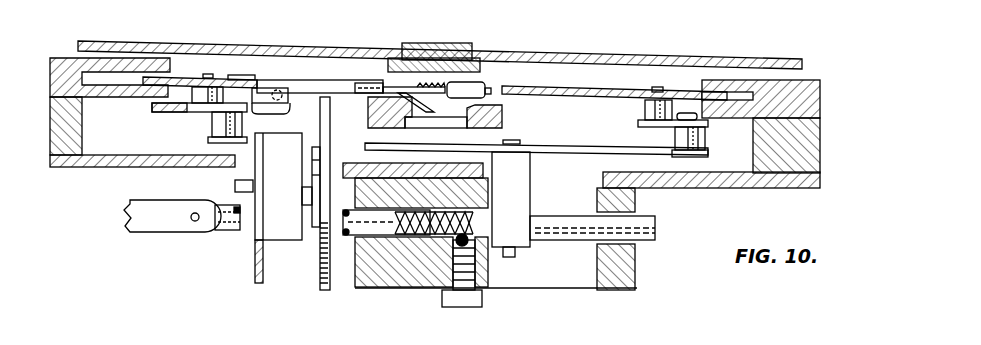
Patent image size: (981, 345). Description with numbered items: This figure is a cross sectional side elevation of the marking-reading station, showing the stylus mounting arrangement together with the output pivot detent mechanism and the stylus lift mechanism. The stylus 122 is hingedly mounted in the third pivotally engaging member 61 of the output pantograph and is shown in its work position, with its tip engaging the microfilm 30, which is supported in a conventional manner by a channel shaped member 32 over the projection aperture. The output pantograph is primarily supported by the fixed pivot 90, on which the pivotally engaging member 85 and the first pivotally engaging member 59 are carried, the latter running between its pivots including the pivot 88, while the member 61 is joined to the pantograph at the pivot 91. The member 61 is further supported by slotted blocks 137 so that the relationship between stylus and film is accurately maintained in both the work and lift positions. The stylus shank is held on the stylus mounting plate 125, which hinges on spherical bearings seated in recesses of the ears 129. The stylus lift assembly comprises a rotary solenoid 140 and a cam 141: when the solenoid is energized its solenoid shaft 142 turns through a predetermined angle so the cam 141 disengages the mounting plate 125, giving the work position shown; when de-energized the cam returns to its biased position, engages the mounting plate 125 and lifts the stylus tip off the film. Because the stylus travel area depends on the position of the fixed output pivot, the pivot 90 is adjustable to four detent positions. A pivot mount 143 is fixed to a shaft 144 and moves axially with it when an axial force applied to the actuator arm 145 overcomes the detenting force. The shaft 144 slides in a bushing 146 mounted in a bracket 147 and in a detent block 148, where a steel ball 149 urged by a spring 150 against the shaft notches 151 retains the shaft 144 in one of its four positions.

The slotted blocks 137 is at (60, 58).
The third pivotally engaging member 61 is at (193, 76).
The stylus mounting plate 125 is at (322, 78).
The stylus 122 is at (423, 105).
The pivot 91 is at (660, 87).
The pivotally engaging member 85 is at (172, 110).
The ears 129 is at (277, 114).
The film 30 is at (502, 107).
The channel shaped member 32 is at (502, 127).
The fixed pivot 90 is at (515, 143).
The pivot 88 is at (677, 118).
The first pivotally engaging member 59 is at (688, 158).
The actuator arm 145 is at (180, 222).
The rotary solenoid 140 is at (295, 230).
The solenoid shaft 142 is at (308, 208).
The cam 141 is at (328, 290).
The detent block 148 is at (393, 288).
The shaft notches 151 is at (423, 232).
The spring 150 is at (490, 260).
The steel ball 149 is at (473, 230).
The pivot mount 143 is at (520, 238).
The shaft 144 is at (577, 207).
The bushing 146 is at (637, 247).
The bracket 147 is at (637, 290).